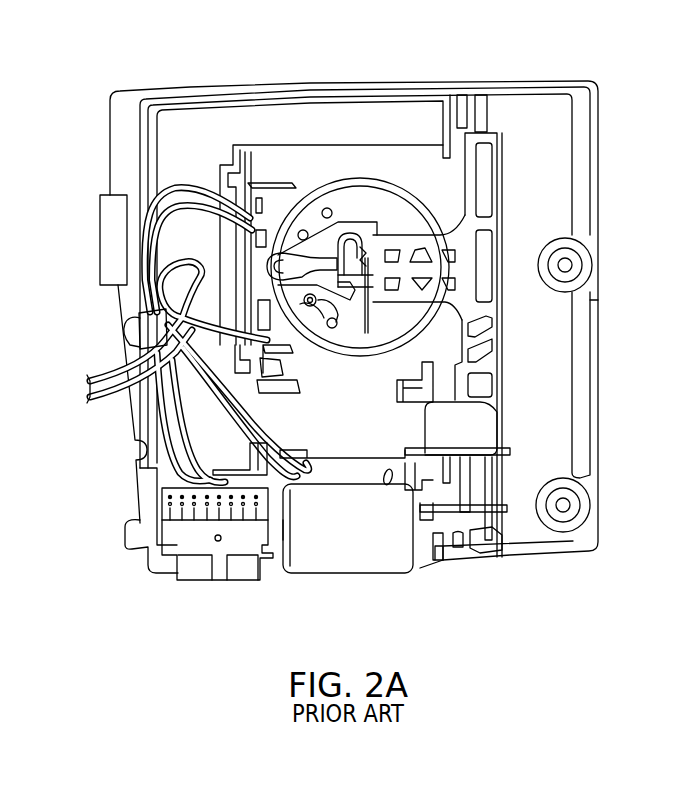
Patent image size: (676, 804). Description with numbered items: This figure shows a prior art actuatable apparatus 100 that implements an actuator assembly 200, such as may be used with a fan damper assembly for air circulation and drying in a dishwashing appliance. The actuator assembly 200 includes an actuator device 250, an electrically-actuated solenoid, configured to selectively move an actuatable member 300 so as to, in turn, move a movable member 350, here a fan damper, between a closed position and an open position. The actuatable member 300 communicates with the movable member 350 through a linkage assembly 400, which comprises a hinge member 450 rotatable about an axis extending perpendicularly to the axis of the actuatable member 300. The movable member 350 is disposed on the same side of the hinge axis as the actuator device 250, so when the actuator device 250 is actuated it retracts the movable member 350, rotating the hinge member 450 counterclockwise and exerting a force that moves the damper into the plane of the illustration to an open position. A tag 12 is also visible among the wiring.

The actuatable apparatus 100 is at (598, 86).
The actuator assembly 200 is at (304, 437).
The wire tag 12 is at (145, 330).
The movable member 350 is at (318, 183).
The linkage assembly 400 is at (510, 232).
The hinge member 450 is at (489, 386).
The actuatable member 300 is at (463, 523).
The actuator device 250 is at (363, 562).